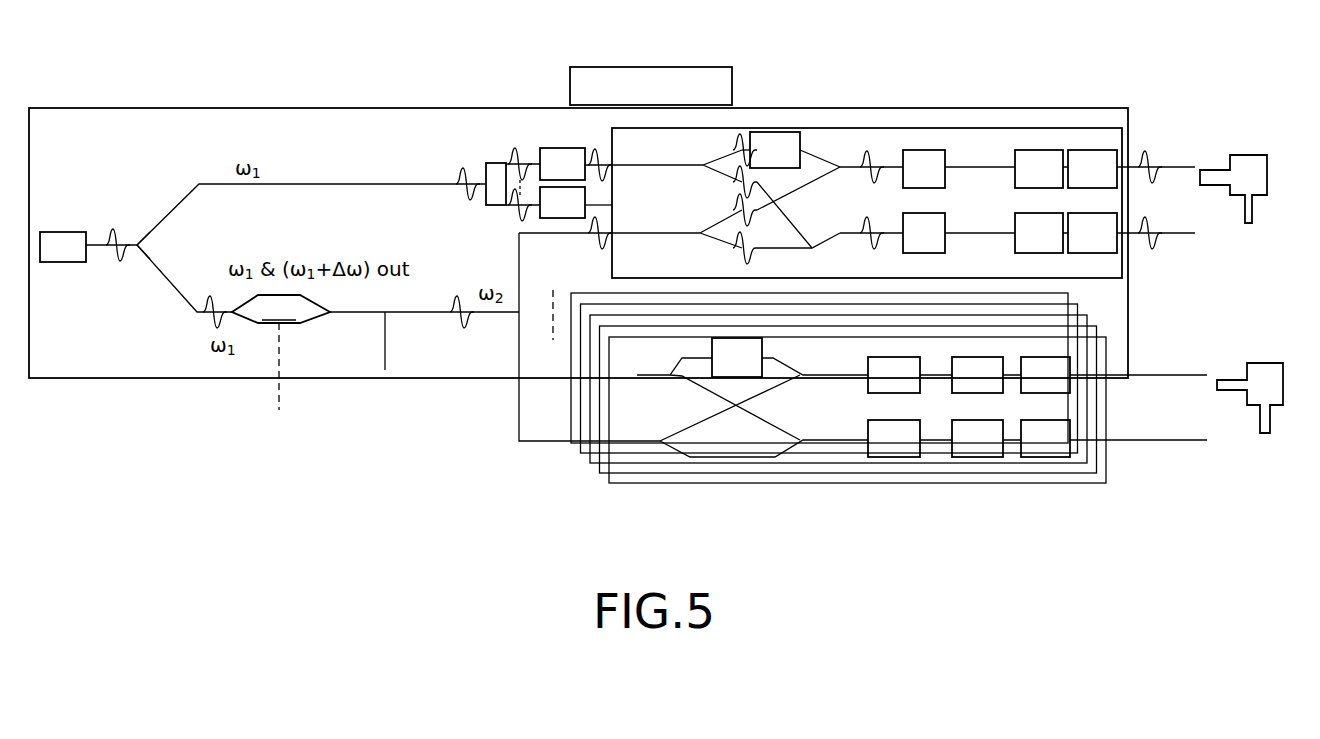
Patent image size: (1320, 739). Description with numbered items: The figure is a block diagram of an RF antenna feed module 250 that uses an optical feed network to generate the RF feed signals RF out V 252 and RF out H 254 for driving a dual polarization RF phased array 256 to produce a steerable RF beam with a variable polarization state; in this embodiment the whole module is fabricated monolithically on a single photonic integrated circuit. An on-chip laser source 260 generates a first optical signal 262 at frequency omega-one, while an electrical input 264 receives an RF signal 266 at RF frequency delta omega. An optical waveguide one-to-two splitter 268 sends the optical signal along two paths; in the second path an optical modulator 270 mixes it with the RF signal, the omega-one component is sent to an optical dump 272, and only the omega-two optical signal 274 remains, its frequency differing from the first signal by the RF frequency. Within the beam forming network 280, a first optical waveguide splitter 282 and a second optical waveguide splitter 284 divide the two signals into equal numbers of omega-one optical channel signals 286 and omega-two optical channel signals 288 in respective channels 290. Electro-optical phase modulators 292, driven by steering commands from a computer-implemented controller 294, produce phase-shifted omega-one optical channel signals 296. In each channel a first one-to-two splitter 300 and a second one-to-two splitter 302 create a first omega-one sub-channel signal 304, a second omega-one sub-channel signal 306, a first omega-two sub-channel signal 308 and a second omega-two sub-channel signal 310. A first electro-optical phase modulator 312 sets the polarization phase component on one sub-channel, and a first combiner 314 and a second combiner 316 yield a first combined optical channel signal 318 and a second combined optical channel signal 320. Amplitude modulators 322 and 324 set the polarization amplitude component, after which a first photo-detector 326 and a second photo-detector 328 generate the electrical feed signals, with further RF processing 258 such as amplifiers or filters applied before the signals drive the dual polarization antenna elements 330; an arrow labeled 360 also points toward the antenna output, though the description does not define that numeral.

The RF antenna feed module 250 is at (938, 103).
The RF out V feed signal 252 is at (1232, 190).
The RF out H feed signal 254 is at (1188, 240).
The dual polarization RF phased array 256 is at (1091, 137).
The RF processing 258 is at (1098, 280).
The on-chip laser source 260 is at (68, 264).
The first optical signal 262 is at (121, 240).
The electrical input 264 is at (284, 380).
The RF signal 266 is at (280, 402).
The optical waveguide 1:2 splitter 268 is at (160, 268).
The optical modulator 270 is at (281, 309).
The optical dump 272 is at (385, 336).
The ω2 optical signal 274 is at (462, 300).
The beam forming network 280 is at (406, 155).
The first optical waveguide splitter 282 is at (490, 162).
The second optical waveguide splitter 284 is at (519, 270).
The ω1 optical channel signals 286 is at (518, 178).
The ω2 optical channel signals 288 is at (604, 240).
The channels 290 is at (553, 338).
The electro-optical phase modulators 292 is at (556, 148).
The computer-implemented controller 294 is at (606, 67).
The phase-shifted ω1 optical channel signals 296 is at (603, 165).
The first optical waveguide 1:2 splitter 300 is at (722, 160).
The second optical waveguide 1:2 splitter 302 is at (648, 228).
The first ω1 optical sub-channel signal 304 is at (752, 132).
The second ω1 optical sub-channel signal 306 is at (760, 195).
The first ω2 optical sub-channel signal 308 is at (732, 214).
The second ω2 optical sub-channel signal 310 is at (730, 252).
The first electro-optical phase modulator 312 is at (802, 150).
The first optical waveguide 2:1 combiner 314 is at (834, 165).
The second optical waveguide 2:1 combiner 316 is at (842, 242).
The first combined optical channel signal 318 is at (874, 165).
The second combined optical channel signal 320 is at (872, 235).
The optical waveguide amplitude modulator 322 is at (935, 150).
The optical waveguide amplitude modulator 324 is at (945, 226).
The first photo-detector 326 is at (1030, 150).
The second photo-detector 328 is at (1016, 253).
The dual polarization antenna elements 330 is at (1263, 155).
The antenna array 360 is at (1217, 114).